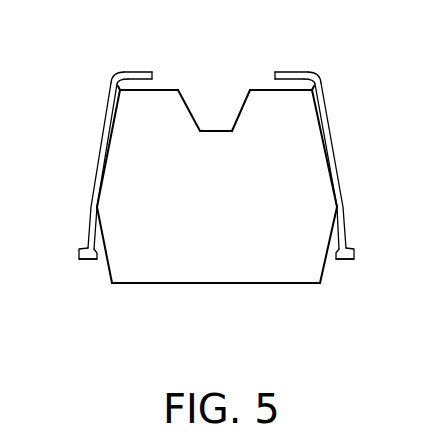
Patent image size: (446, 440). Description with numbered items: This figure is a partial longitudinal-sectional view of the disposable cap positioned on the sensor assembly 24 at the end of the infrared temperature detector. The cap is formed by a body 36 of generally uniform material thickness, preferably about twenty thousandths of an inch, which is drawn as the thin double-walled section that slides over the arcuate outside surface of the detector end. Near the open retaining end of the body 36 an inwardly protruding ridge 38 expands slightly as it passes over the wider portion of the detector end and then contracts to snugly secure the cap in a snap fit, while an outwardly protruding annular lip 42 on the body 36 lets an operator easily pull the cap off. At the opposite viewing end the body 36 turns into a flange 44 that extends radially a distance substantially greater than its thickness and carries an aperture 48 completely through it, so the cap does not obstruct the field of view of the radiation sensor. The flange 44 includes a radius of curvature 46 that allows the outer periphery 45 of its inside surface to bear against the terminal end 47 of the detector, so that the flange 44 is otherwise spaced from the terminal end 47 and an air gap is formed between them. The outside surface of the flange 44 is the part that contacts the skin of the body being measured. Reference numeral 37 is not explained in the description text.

The sensor assembly 24 is at (200, 274).
The body 36 is at (98, 160).
The tray side wall 37 is at (98, 207).
The inwardly protruding ridge 38 is at (88, 245).
The outwardly protruding annular lip 42 is at (87, 262).
The flange 44 is at (138, 71).
The outer periphery 45 is at (121, 92).
The radius of curvature 46 is at (114, 74).
The terminal end 47 is at (262, 88).
The aperture 48 is at (156, 80).